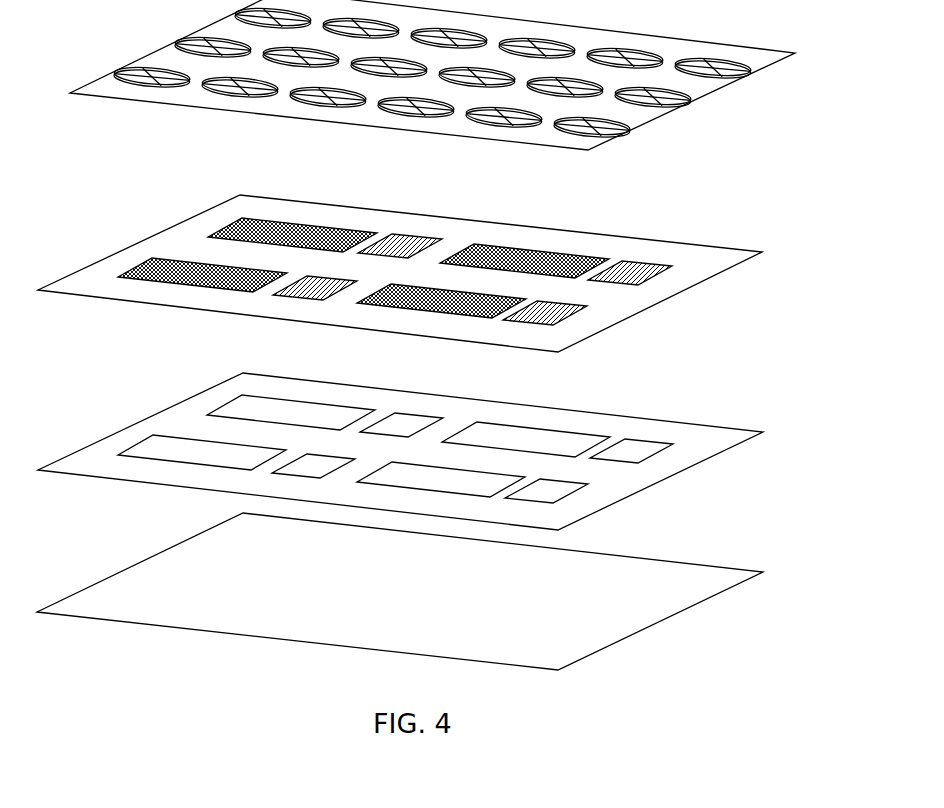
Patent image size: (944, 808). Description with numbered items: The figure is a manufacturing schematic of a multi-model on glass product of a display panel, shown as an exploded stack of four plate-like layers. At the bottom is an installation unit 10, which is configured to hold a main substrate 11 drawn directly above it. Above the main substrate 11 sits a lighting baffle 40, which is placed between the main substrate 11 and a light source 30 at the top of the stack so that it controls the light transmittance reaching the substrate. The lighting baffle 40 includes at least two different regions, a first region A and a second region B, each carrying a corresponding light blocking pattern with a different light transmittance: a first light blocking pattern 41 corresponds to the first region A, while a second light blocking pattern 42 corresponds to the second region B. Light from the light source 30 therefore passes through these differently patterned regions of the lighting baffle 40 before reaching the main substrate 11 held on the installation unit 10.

The installation unit 10 is at (625, 602).
The main substrate 11 is at (185, 422).
The light source 30 is at (698, 85).
The lighting baffle 40 is at (185, 245).
The first light blocking pattern 41 is at (677, 268).
The second light blocking pattern 42 is at (535, 260).
The first region A is at (638, 452).
The second region B is at (533, 440).